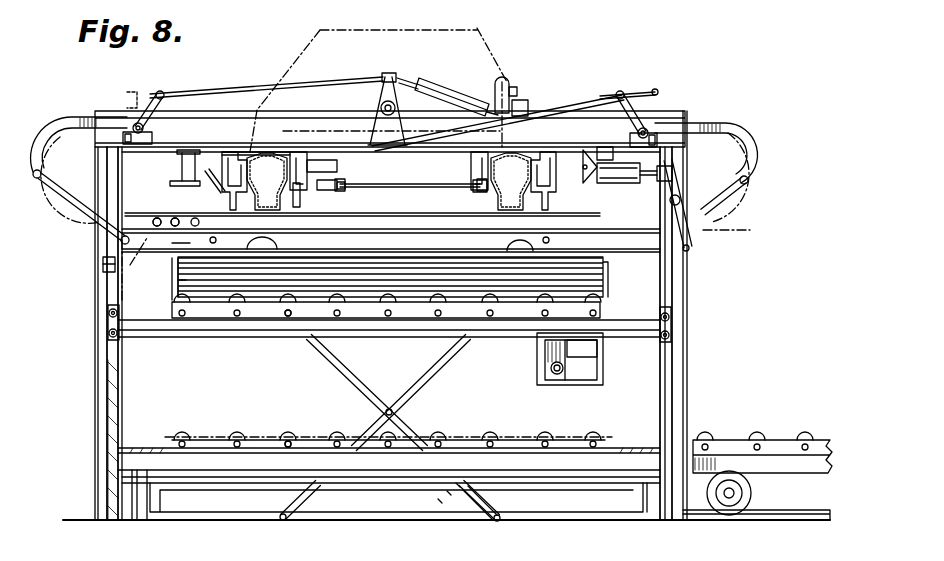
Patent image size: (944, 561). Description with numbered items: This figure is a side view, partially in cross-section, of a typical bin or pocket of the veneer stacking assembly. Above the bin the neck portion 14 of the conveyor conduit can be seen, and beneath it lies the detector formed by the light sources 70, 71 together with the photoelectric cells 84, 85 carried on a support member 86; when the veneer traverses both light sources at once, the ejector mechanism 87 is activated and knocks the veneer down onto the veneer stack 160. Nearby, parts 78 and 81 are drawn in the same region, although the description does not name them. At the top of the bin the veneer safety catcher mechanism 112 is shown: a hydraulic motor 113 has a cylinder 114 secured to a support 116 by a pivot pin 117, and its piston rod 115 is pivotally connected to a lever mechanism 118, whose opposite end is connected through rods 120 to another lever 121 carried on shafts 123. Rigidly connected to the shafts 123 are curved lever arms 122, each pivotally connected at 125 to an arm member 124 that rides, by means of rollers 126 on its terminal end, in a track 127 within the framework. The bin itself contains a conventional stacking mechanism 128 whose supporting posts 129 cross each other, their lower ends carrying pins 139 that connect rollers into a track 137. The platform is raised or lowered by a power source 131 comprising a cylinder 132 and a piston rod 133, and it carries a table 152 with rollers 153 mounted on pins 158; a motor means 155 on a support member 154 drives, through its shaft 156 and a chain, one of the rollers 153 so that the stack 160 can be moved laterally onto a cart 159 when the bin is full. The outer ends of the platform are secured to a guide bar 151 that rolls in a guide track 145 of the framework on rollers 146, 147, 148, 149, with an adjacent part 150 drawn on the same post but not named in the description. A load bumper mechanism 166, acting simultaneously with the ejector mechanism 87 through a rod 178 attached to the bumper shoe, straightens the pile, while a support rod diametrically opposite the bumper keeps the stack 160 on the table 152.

The neck portion 14 is at (176, 322).
The light source 70 is at (176, 218).
The light source 71 is at (177, 243).
The fitting 78 is at (157, 219).
The bar 81 is at (213, 214).
The photoelectric cell 84 is at (173, 184).
The photoelectric cell 85 is at (200, 187).
The support member 86 is at (177, 165).
The ejector mechanism 87 is at (412, 196).
The veneer safety catcher mechanism 112 is at (357, 68).
The hydraulic motor 113 is at (468, 89).
The cylinder 114 is at (502, 78).
The piston rod 115 is at (422, 78).
The support 116 is at (520, 110).
The pivot pin 117 is at (514, 86).
The lever mechanism 118 is at (389, 79).
The rods 120 is at (163, 92).
The lever 121 is at (147, 90).
The curved lever arms 122 is at (72, 112).
The shafts 123 is at (152, 133).
The arm member 124 is at (55, 186).
The pivot 125 is at (37, 180).
The rollers 126 is at (100, 260).
The track 127 is at (268, 242).
The stacking mechanism 128 is at (320, 386).
The supporting posts 129 is at (416, 360).
The power source 131 is at (447, 506).
The cylinder 132 is at (448, 498).
The piston rod 133 is at (407, 437).
The track 137 is at (230, 517).
The pin 139 is at (281, 521).
The guide track 145 is at (117, 403).
The roller 146 is at (672, 334).
The roller 147 is at (670, 317).
The roller 148 is at (108, 313).
The roller 149 is at (107, 330).
The bolt 150 is at (672, 327).
The guide bar 151 is at (108, 325).
The table 152 is at (350, 303).
The rollers 153 is at (175, 305).
The support member 154 is at (606, 350).
The motor means 155 is at (578, 358).
The shaft 156 is at (557, 375).
The pins 158 is at (293, 317).
The cart 159 is at (732, 438).
The veneer stack 160 is at (442, 284).
The load bumper mechanism 166 is at (623, 277).
The rod 178 is at (178, 282).